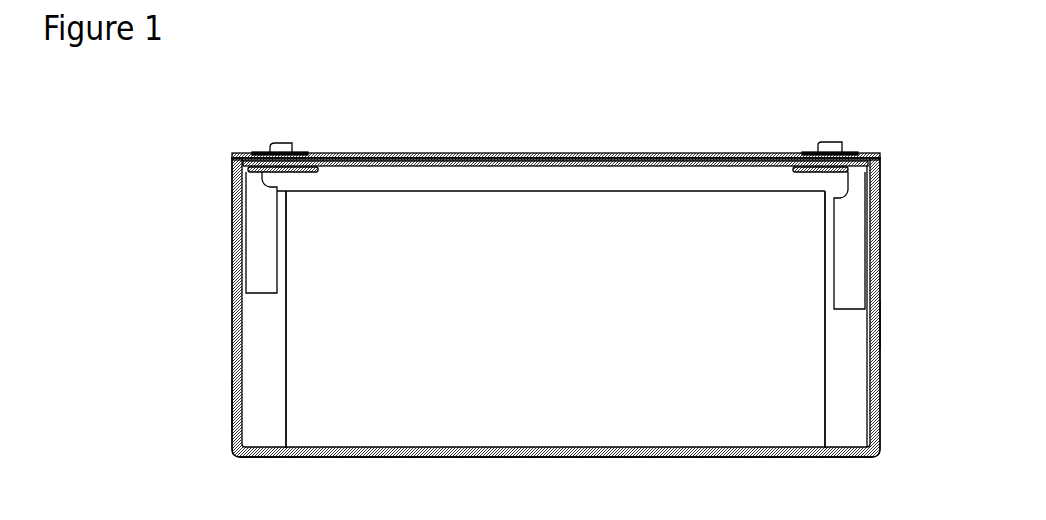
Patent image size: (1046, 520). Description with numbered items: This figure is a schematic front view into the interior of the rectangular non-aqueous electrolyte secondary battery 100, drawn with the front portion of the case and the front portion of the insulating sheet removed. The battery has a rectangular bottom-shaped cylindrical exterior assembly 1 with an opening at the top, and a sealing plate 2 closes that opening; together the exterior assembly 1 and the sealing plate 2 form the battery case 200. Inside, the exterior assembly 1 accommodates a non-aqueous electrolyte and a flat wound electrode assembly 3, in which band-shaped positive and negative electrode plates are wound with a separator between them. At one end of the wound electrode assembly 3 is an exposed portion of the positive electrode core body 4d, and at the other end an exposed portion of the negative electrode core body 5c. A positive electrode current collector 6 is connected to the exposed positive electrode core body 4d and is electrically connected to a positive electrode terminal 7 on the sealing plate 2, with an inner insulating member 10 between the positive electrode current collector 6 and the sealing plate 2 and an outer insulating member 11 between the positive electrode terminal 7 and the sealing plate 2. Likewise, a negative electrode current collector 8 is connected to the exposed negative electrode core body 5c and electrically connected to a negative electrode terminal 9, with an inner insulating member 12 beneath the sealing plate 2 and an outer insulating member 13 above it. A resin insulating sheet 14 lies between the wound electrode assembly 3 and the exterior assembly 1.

The rectangular non-aqueous electrolyte secondary battery 100 is at (250, 82).
The exterior assembly 1 is at (882, 365).
The sealing plate 2 is at (442, 154).
The wound electrode assembly 3 is at (563, 437).
The positive electrode core body 4d is at (850, 435).
The negative electrode core body 5c is at (257, 437).
The positive electrode current collector 6 is at (856, 230).
The positive electrode terminal 7 is at (832, 141).
The negative electrode current collector 8 is at (257, 248).
The negative electrode terminal 9 is at (279, 142).
The inner insulating member 10 is at (846, 161).
The outer insulating member 11 is at (805, 152).
The inner insulating member 12 is at (318, 163).
The outer insulating member 13 is at (305, 152).
The insulating sheet 14 is at (232, 402).
The battery case 200 is at (882, 326).